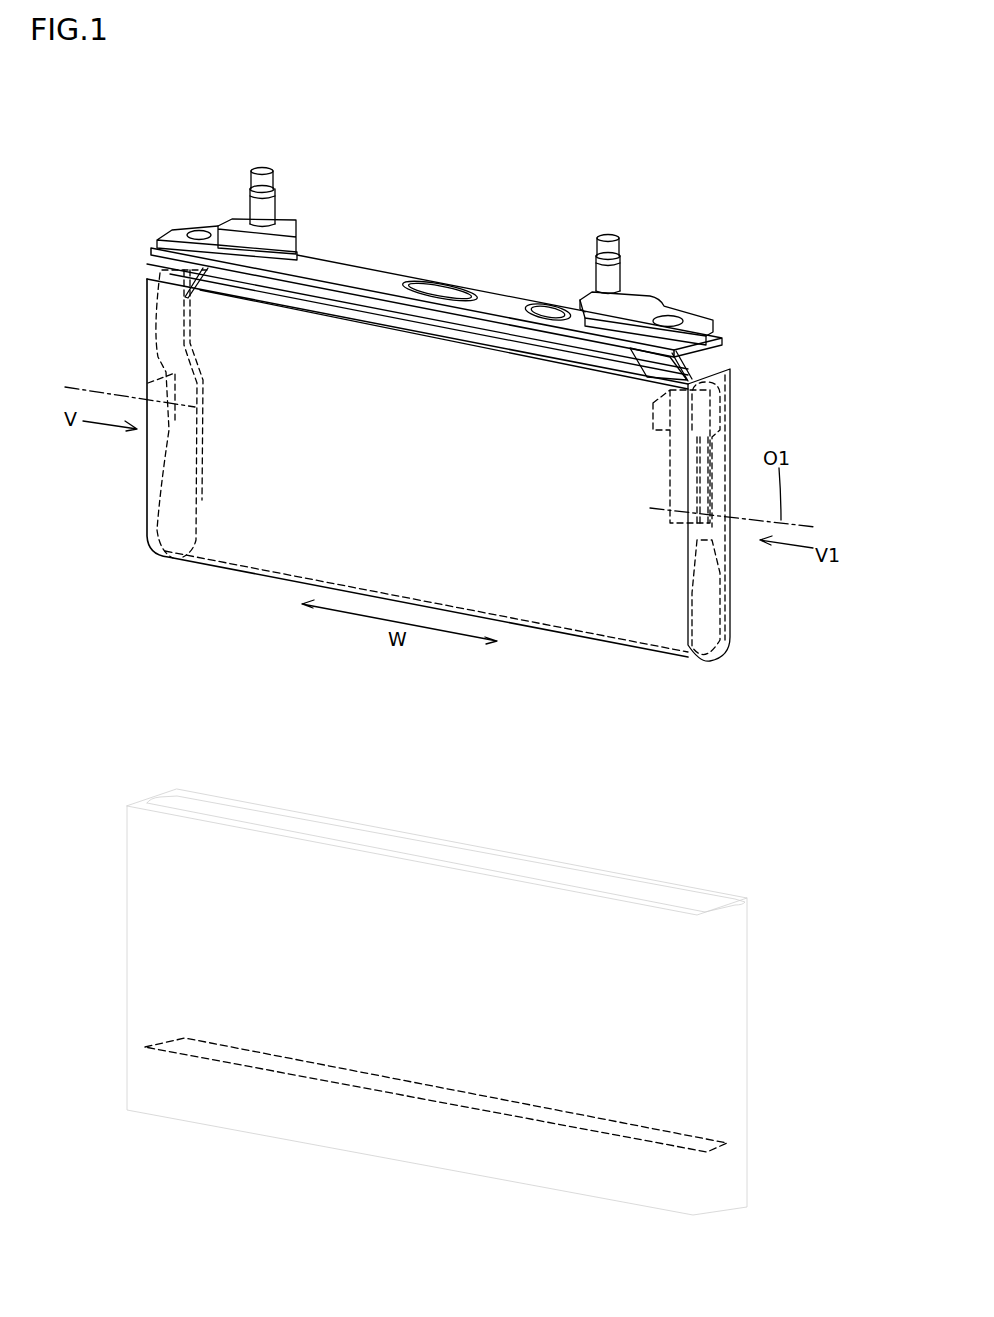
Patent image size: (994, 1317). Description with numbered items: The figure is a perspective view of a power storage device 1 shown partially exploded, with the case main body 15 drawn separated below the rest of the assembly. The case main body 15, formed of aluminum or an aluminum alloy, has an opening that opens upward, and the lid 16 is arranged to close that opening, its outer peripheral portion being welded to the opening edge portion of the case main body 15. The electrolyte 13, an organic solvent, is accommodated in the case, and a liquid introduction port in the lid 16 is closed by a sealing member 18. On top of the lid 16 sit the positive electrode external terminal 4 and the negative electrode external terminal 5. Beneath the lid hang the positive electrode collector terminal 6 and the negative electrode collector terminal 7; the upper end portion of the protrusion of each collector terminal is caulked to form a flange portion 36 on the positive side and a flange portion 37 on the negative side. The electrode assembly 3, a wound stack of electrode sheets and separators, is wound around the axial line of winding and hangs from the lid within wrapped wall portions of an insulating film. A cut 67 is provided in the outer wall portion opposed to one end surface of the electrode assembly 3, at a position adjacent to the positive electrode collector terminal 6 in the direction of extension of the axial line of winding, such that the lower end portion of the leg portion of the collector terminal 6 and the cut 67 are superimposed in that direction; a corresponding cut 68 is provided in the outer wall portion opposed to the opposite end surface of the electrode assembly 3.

The power storage device 1 is at (420, 212).
The electrode assembly 3 is at (538, 632).
The positive electrode external terminal 4 is at (262, 167).
The negative electrode external terminal 5 is at (607, 236).
The positive electrode collector terminal 6 is at (150, 268).
The negative electrode collector terminal 7 is at (731, 369).
The electrolyte 13 is at (700, 1145).
The case main body 15 is at (735, 992).
The lid 16 is at (722, 343).
The sealing member 18 is at (548, 312).
The flange portion 36 is at (200, 232).
The flange portion 37 is at (668, 318).
The cut 67 is at (158, 438).
The cut 68 is at (703, 540).